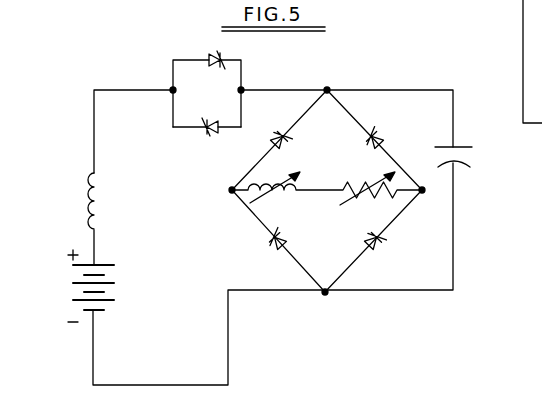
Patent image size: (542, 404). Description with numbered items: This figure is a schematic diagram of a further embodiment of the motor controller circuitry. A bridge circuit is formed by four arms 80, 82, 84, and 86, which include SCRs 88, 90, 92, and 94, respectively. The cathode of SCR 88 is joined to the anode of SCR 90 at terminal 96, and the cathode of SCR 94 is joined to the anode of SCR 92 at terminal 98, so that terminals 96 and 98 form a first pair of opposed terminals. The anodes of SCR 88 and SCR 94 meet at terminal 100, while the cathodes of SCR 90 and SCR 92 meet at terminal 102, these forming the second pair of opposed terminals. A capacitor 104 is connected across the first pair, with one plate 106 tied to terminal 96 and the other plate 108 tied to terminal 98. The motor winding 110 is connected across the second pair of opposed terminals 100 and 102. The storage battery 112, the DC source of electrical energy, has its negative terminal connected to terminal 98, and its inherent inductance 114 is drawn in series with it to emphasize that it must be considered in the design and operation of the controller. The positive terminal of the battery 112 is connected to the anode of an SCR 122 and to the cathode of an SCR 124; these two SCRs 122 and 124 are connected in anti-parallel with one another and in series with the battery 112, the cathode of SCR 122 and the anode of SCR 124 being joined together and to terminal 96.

The arm 80 is at (254, 167).
The arm 82 is at (400, 165).
The arm 84 is at (388, 229).
The arm 86 is at (257, 226).
The SCR 88 is at (278, 133).
The SCR 90 is at (372, 133).
The SCR 92 is at (375, 251).
The SCR 94 is at (270, 250).
The terminal 96 is at (328, 90).
The terminal 98 is at (328, 296).
The terminal 100 is at (231, 191).
The terminal 102 is at (422, 198).
The capacitor 104 is at (476, 151).
The plate 106 is at (457, 146).
The plate 108 is at (460, 165).
The motor winding 110 is at (283, 171).
The storage battery 112 is at (116, 290).
The inductance 114 is at (101, 200).
The SCR 122 is at (208, 57).
The SCR 124 is at (208, 121).